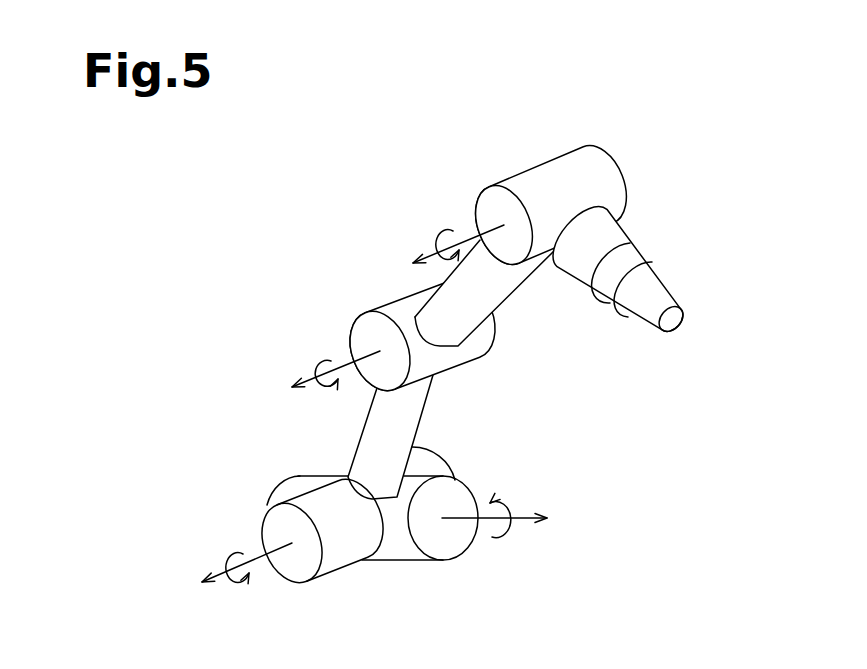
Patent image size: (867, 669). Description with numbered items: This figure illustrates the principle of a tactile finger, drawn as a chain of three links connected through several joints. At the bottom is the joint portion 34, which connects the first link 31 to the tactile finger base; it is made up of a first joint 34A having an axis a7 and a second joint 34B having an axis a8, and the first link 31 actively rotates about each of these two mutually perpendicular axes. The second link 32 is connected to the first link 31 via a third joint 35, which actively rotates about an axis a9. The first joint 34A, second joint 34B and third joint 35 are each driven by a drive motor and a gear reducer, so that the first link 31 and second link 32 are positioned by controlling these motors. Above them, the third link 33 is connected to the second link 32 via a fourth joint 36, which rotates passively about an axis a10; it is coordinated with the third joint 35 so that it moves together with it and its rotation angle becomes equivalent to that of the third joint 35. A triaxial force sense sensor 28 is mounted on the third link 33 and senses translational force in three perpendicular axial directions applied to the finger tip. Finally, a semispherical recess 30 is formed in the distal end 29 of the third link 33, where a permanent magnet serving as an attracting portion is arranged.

The triaxial force sense sensor 28 is at (647, 253).
The distal end 29 is at (673, 277).
The semispherical recess 30 is at (673, 322).
The first link 31 is at (416, 412).
The second link 32 is at (508, 282).
The third link 33 is at (615, 232).
The joint portion 34 is at (403, 553).
The first joint 34A is at (465, 487).
The second joint 34B is at (343, 563).
The third joint 35 is at (477, 350).
The fourth joint 36 is at (603, 168).
The axis a7 is at (498, 511).
The axis a8 is at (237, 561).
The axis a9 is at (336, 360).
The axis a10 is at (453, 229).